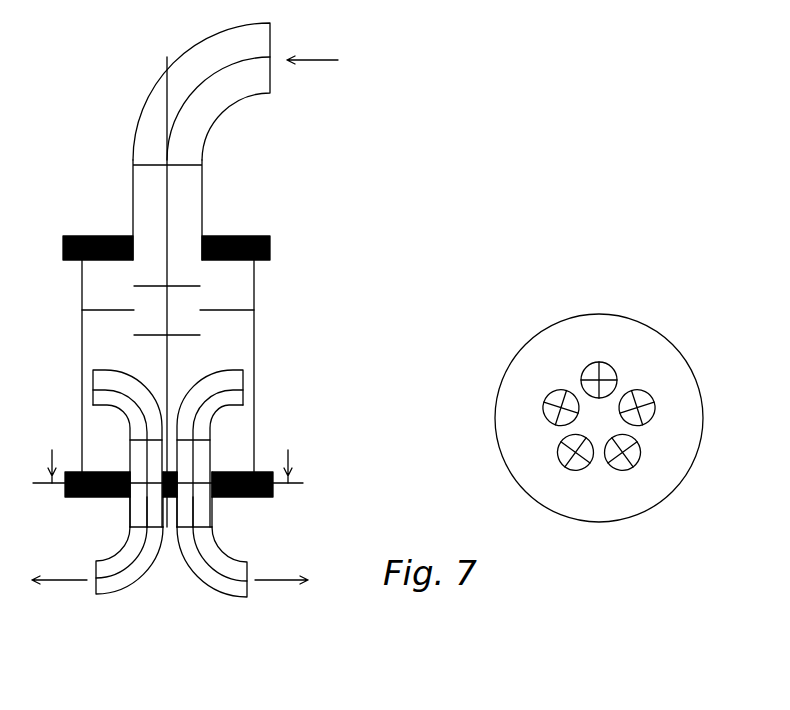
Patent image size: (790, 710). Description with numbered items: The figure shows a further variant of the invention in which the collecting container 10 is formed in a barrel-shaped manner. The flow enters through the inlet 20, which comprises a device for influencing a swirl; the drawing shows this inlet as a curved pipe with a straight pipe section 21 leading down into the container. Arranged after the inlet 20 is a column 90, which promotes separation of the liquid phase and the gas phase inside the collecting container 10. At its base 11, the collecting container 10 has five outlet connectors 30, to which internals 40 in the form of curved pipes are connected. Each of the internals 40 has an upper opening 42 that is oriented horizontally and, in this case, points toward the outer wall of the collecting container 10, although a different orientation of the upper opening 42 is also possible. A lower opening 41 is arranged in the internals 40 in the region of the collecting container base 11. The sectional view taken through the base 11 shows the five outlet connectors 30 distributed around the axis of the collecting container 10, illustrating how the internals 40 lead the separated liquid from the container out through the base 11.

The collecting container 10 is at (82, 348).
The base 11 is at (243, 473).
The inlet 20 is at (133, 108).
The pipe section 21 is at (178, 185).
The outlet connectors 30 is at (118, 552).
The internals 40 is at (110, 412).
The lower opening 41 is at (130, 467).
The upper opening 42 is at (93, 390).
The column 90 is at (197, 300).